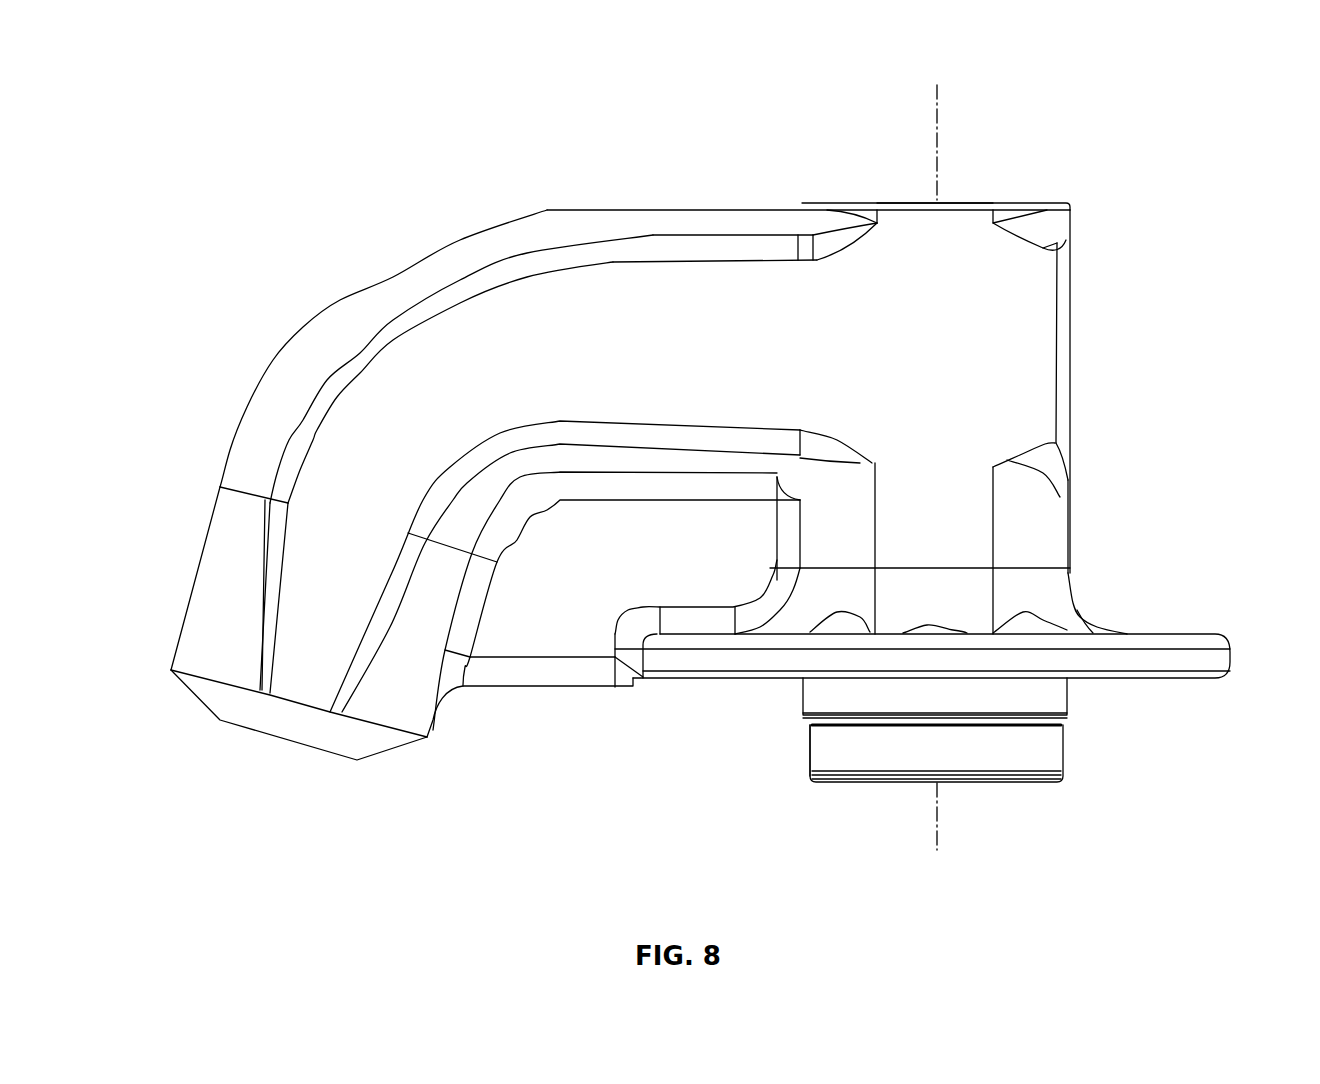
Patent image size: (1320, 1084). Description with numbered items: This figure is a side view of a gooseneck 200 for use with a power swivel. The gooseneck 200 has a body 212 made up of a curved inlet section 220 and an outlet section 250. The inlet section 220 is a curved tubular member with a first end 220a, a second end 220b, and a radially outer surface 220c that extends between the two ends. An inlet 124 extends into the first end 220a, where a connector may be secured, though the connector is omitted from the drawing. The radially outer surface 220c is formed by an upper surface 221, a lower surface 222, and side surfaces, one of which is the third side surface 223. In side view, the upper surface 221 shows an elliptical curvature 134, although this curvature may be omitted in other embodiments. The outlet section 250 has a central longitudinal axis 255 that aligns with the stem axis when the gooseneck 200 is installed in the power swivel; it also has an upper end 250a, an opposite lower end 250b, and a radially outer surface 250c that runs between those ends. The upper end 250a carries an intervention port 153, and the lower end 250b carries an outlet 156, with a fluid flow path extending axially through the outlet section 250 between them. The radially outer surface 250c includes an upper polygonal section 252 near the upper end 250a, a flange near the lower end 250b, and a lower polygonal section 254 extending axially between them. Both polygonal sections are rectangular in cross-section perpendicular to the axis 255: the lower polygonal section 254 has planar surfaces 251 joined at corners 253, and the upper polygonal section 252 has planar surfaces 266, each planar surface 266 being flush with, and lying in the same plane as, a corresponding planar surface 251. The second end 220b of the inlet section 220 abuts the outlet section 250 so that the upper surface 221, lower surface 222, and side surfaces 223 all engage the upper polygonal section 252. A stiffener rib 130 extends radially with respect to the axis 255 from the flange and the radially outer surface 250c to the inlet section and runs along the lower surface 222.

The gooseneck 200 is at (207, 80).
The inlet section 220 is at (295, 230).
The body 212 is at (550, 190).
The elliptical curvature 134 is at (397, 260).
The upper surface 221 is at (640, 217).
The third side surface 223 is at (675, 290).
The radially outer surface 220c is at (300, 332).
The first end 220a is at (235, 733).
The inlet 124 is at (291, 745).
The second end 220b is at (807, 237).
The lower surface 222 is at (523, 468).
The stiffener rib 130 is at (580, 598).
The outlet section 250 is at (1192, 342).
The upper end 250a is at (1045, 200).
The intervention port 153 is at (965, 200).
The longitudinal axis 255 is at (942, 92).
The upper polygonal section 252 is at (1074, 280).
The planar surfaces 266 is at (1062, 329).
The radially outer surface 250c is at (1071, 303).
The planar surfaces 251 is at (1067, 497).
The lower polygonal section 254 is at (1073, 525).
The corners 253 is at (1048, 538).
The lower end 250b is at (1018, 790).
The outlet 156 is at (890, 790).